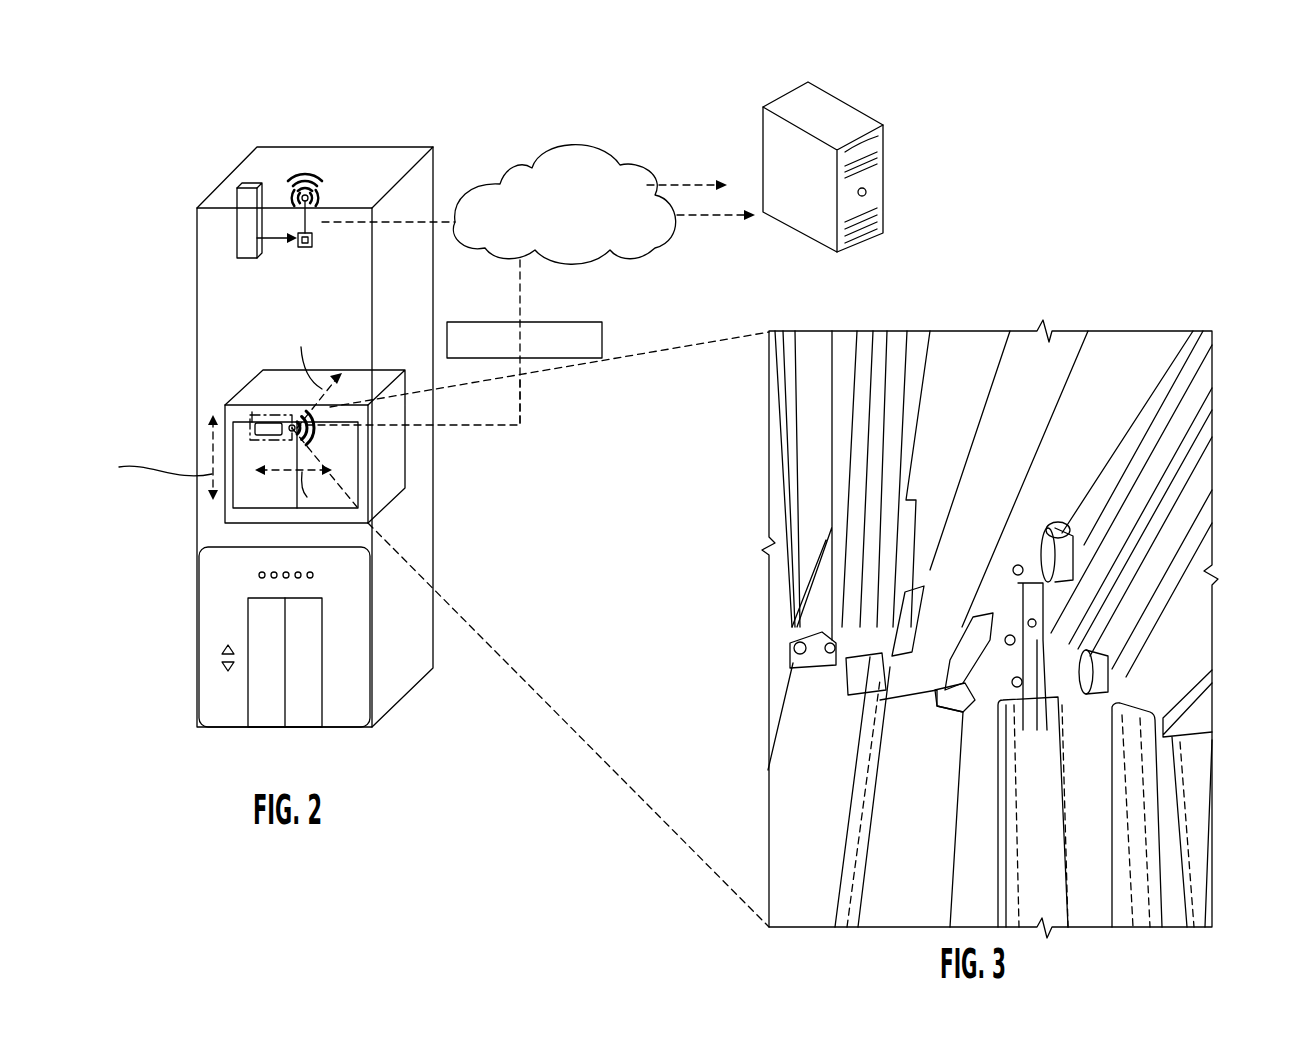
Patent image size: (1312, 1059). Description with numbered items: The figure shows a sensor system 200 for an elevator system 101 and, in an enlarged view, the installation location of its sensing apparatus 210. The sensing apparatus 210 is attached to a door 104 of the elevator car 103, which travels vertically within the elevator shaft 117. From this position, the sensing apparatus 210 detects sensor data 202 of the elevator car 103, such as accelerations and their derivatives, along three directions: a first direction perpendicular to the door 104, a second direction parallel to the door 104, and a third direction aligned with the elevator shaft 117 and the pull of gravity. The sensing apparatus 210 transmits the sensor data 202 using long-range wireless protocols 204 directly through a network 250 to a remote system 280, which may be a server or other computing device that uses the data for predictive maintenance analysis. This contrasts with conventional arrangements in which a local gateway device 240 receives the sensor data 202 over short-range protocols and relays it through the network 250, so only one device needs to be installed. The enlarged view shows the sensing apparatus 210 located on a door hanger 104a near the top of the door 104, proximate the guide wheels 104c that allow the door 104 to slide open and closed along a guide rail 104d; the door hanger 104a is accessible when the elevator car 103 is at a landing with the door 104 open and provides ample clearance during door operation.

In FIG. 2, the sensor system 200 is at (170, 138).
In FIG. 2, the elevator system 101 is at (152, 601).
In FIG. 2, the elevator car 103 is at (225, 509).
In FIG. 2, the door 104 is at (248, 502).
In FIG. 3, the door 104 is at (1083, 777).
In FIG. 3, the door hanger 104a is at (990, 680).
In FIG. 3, the guide wheels 104c is at (1067, 550).
In FIG. 3, the guide rail 104d is at (1085, 563).
In FIG. 2, the elevator shaft 117 is at (248, 304).
In FIG. 2, the sensing apparatus 210 is at (255, 433).
In FIG. 3, the sensing apparatus 210 is at (970, 667).
In FIG. 2, the local gateway device 240 is at (305, 248).
In FIG. 2, the network 250 is at (518, 170).
In FIG. 2, the remote system 280 is at (885, 188).
In FIG. 2, the sensor data 202 is at (602, 337).
In FIG. 2, the long-range wireless protocols 204 is at (520, 407).